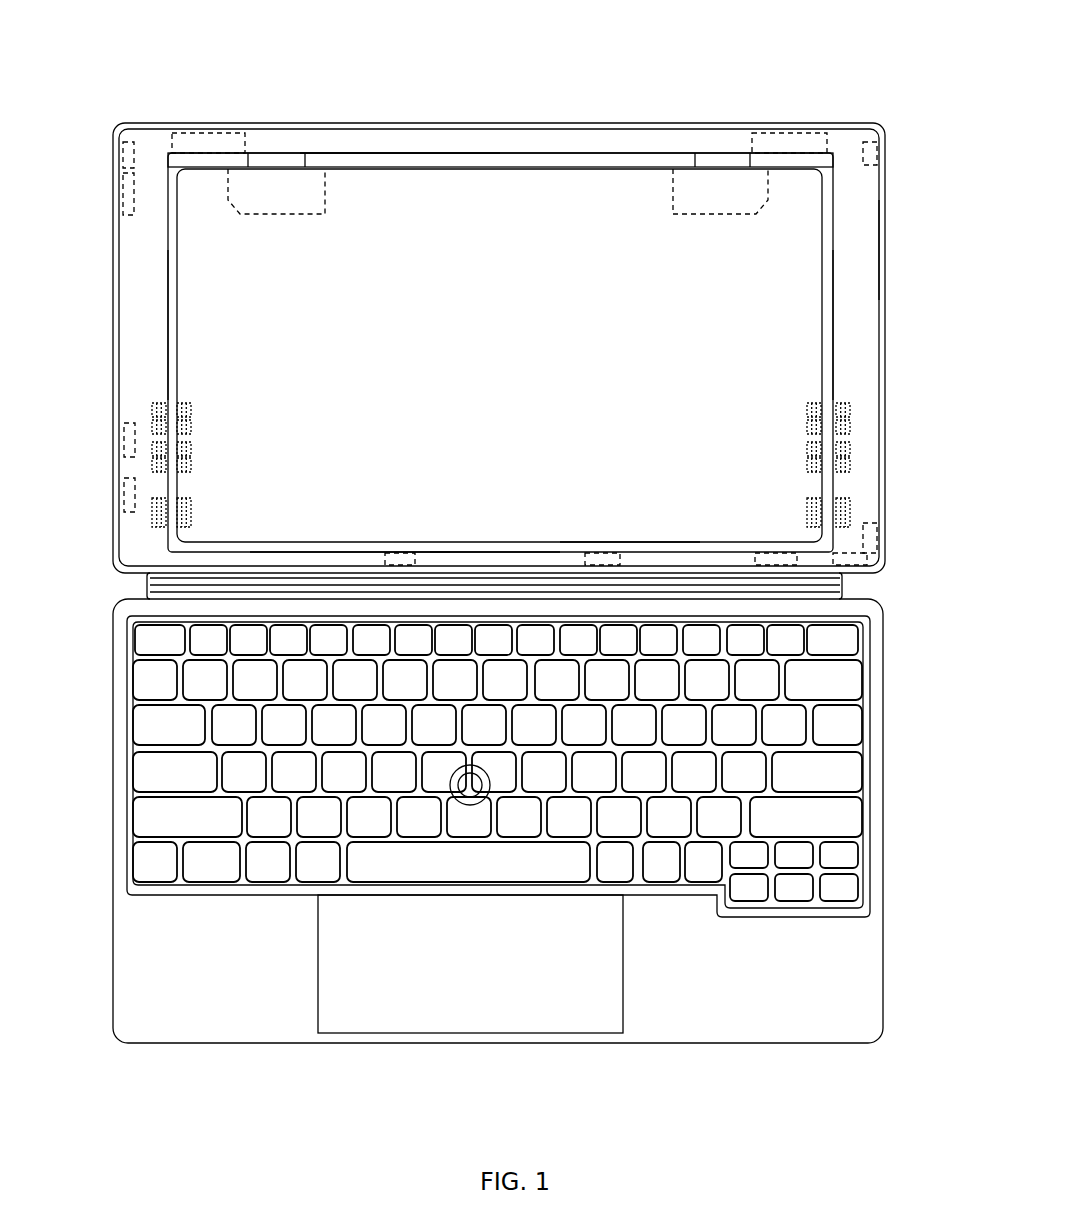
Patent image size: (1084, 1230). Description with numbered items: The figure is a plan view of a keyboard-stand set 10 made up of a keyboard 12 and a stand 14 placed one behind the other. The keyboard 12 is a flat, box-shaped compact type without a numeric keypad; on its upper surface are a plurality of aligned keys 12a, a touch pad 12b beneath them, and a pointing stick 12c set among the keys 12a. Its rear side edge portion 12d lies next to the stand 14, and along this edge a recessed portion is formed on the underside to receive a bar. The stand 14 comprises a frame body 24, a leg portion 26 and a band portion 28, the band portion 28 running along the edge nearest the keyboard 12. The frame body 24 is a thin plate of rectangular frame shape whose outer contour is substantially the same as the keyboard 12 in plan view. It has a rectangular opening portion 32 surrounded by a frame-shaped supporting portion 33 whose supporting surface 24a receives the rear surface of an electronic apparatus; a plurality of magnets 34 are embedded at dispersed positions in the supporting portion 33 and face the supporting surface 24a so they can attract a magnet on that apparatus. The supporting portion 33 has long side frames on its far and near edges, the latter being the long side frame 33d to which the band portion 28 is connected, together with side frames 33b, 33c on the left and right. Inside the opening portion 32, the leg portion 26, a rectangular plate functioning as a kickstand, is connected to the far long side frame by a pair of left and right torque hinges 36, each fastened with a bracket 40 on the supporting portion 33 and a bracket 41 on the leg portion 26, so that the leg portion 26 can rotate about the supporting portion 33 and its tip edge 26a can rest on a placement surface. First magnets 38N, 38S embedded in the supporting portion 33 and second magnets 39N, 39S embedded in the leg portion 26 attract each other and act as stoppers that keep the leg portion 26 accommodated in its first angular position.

The keyboard-stand set 10 is at (98, 52).
The keyboard 12 is at (890, 717).
The keys 12a is at (190, 773).
The touch pad 12b is at (543, 995).
The pointing stick 12c is at (470, 790).
The rear side edge portion 12d is at (282, 600).
The stand 14 is at (890, 450).
The frame body 24 is at (628, 126).
The supporting surface 24a is at (862, 247).
The leg portion 26 is at (500, 188).
The tip edge 26a is at (637, 545).
The band portion 28 is at (503, 566).
The opening portion 32 is at (458, 175).
The supporting portion 33 is at (570, 145).
The long side frame 33b is at (150, 316).
The long side frame 33c is at (850, 318).
The long side frame 33d is at (328, 558).
The magnets 34 is at (123, 150).
The torque hinge 36 is at (282, 152).
The first magnet 38N is at (192, 408).
The first magnet 38S is at (192, 470).
The second magnet 39N is at (192, 450).
The second magnet 39S is at (192, 428).
The bracket 40 is at (205, 133).
The bracket 41 is at (300, 214).